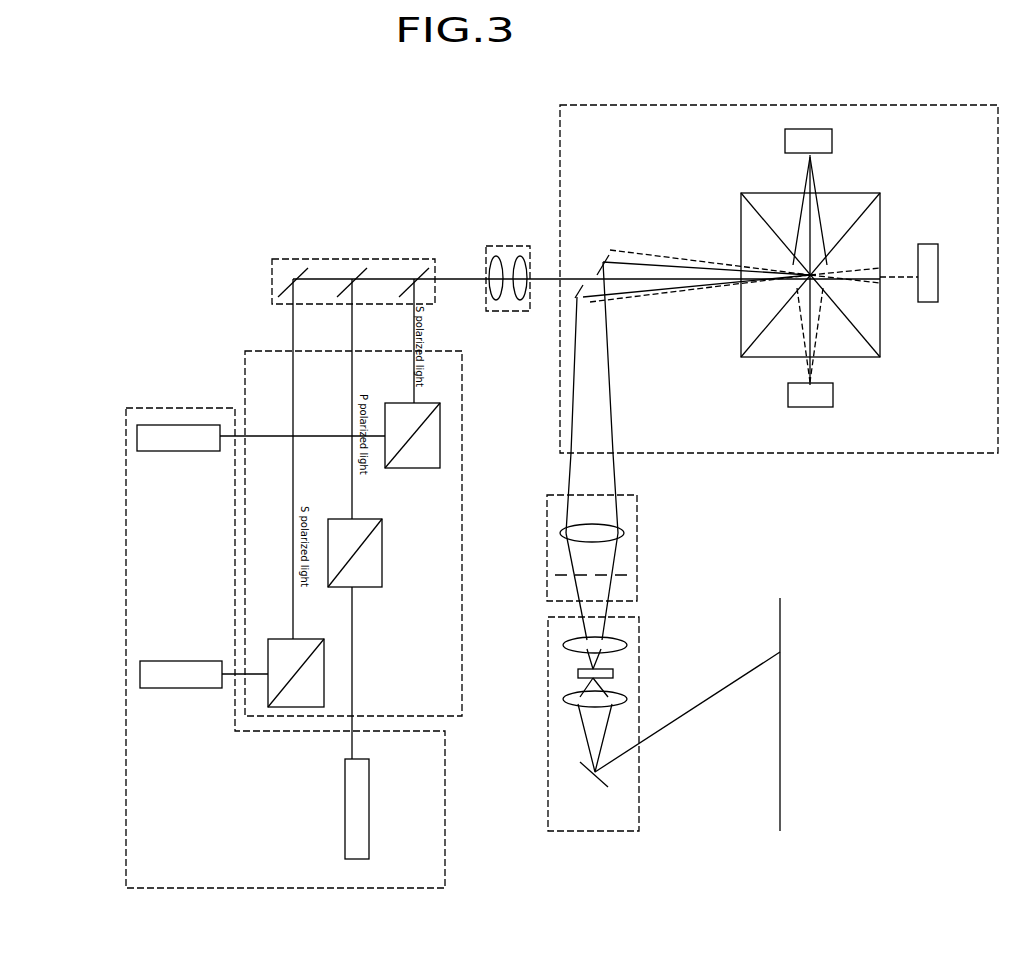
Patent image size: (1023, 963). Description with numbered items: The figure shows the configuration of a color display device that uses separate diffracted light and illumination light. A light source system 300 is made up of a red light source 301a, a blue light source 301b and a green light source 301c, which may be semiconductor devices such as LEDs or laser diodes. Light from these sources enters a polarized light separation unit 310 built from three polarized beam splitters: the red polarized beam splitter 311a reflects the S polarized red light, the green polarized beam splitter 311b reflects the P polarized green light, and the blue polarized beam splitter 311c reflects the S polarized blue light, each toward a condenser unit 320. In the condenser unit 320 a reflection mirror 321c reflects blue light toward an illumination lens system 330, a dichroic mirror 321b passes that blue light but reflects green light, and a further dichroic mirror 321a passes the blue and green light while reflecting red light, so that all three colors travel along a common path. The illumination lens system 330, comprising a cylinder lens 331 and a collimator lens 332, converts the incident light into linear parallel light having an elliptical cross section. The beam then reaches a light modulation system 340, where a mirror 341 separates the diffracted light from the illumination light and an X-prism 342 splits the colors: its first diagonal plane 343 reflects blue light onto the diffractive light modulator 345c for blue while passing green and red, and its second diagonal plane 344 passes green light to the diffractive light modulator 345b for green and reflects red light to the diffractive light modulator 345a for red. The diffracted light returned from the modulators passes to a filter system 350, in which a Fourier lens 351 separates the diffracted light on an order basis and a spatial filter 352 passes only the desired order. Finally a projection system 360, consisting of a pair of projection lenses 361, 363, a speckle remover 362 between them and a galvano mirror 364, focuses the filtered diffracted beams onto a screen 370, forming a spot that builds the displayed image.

The light source system 300 is at (445, 807).
The red light source 301a is at (176, 452).
The blue light source 301b is at (357, 859).
The green light source 301c is at (180, 689).
The polarized light separation unit 310 is at (462, 677).
The red polarized beam splitter 311a is at (390, 403).
The green polarized beam splitter 311b is at (340, 519).
The blue polarized beam splitter 311c is at (282, 639).
The condenser unit 320 is at (430, 259).
The dichroic mirror 321a is at (417, 268).
The dichroic mirror 321b is at (357, 268).
The reflection mirror 321c is at (298, 268).
The illumination lens system 330 is at (486, 265).
The cylinder lens 331 is at (497, 256).
The collimator lens 332 is at (520, 256).
The light modulation system 340 is at (560, 147).
The mirror 341 is at (602, 262).
The X-prism 342 is at (740, 248).
The first diagonal plane 343 is at (852, 228).
The second diagonal plane 344 is at (862, 330).
The diffractive light modulator for the red color 345a is at (833, 393).
The diffractive light modulator for the green color 345b is at (938, 270).
The diffractive light modulator for the blue color 345c is at (832, 137).
The filter system 350 is at (547, 547).
The Fourier lens 351 is at (620, 531).
The spatial filter 352 is at (620, 573).
The projection system 360 is at (595, 833).
The projection lens 361 is at (627, 643).
The speckle remover 362 is at (613, 673).
The projection lens 363 is at (627, 697).
The galvano mirror 364 is at (593, 791).
The screen 370 is at (780, 738).